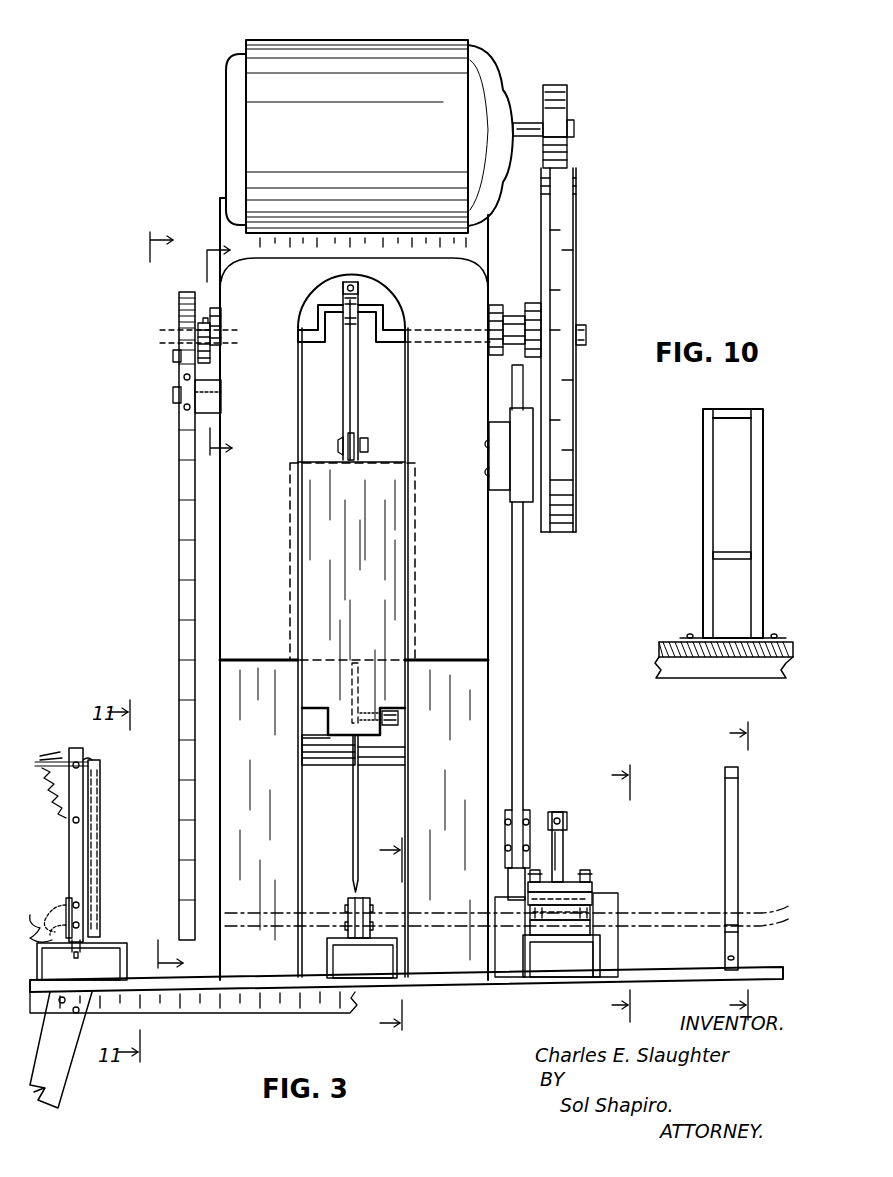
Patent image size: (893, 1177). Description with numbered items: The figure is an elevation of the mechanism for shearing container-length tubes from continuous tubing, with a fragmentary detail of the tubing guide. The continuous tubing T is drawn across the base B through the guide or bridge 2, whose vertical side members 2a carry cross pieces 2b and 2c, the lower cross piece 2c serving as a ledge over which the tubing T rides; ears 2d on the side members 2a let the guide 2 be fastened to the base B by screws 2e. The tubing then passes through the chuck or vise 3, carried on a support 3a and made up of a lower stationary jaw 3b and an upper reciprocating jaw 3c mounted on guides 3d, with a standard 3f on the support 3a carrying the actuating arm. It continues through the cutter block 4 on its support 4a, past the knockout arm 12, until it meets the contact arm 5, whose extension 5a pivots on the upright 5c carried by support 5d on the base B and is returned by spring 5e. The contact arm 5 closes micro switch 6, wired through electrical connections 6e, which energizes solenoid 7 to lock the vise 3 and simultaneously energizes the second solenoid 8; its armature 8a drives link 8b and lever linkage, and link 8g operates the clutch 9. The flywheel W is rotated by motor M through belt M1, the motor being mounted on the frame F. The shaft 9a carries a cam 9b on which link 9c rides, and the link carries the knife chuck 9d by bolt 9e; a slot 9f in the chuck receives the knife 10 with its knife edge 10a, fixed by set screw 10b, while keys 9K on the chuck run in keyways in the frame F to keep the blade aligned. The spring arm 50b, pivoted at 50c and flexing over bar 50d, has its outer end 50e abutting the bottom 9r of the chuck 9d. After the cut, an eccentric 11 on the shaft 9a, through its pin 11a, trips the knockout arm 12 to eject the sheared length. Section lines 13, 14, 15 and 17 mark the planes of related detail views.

In FIG. 3, the motor M is at (438, 40).
In FIG. 3, the belt M1 is at (560, 200).
In FIG. 3, the flywheel W is at (577, 242).
In FIG. 3, the frame F is at (250, 568).
In FIG. 3, the base B is at (668, 968).
In FIG. 10, the base B is at (658, 648).
In FIG. 3, the tubing T is at (678, 900).
In FIG. 3, the guide or bridge 2 is at (738, 838).
In FIG. 10, the guide or bridge 2 is at (765, 505).
In FIG. 10, the vertical side members 2a is at (703, 470).
In FIG. 10, the cross piece 2b is at (740, 402).
In FIG. 10, the cross piece 2c is at (726, 552).
In FIG. 10, the ears 2d is at (685, 638).
In FIG. 10, the screws 2e is at (690, 632).
In FIG. 3, the chuck or vise 3 is at (594, 884).
In FIG. 3, the support 3a is at (523, 965).
In FIG. 3, the lower stationary jaw 3b is at (590, 927).
In FIG. 3, the upper reciprocating jaw 3c is at (594, 897).
In FIG. 3, the guides 3d is at (530, 908).
In FIG. 3, the standard 3f is at (563, 842).
In FIG. 3, the cutter block 4 is at (348, 906).
In FIG. 3, the support 4a is at (327, 952).
In FIG. 3, the contact arm 5 is at (103, 894).
In FIG. 3, the extension 5a is at (50, 758).
In FIG. 3, the upright 5c is at (72, 838).
In FIG. 3, the support 5d is at (125, 952).
In FIG. 3, the spring 5e is at (55, 800).
In FIG. 3, the micro switch 6 is at (66, 892).
In FIG. 3, the electrical connections 6e is at (45, 916).
In FIG. 3, the solenoid 7 is at (626, 900).
In FIG. 3, the second solenoid 8 is at (495, 905).
In FIG. 3, the armature 8a is at (506, 888).
In FIG. 3, the link 8b is at (518, 752).
In FIG. 3, the link 8g is at (520, 592).
In FIG. 3, the clutch 9 is at (525, 356).
In FIG. 3, the shaft 9a is at (400, 345).
In FIG. 3, the cam 9b is at (362, 302).
In FIG. 3, the link 9c is at (345, 372).
In FIG. 3, the knife chuck 9d is at (400, 502).
In FIG. 3, the bolt 9e is at (372, 445).
In FIG. 3, the slot 9f is at (360, 676).
In FIG. 3, the keys 9K is at (290, 510).
In FIG. 3, the bottom of knife chuck 9r is at (390, 742).
In FIG. 3, the knife 10 is at (358, 802).
In FIG. 3, the knife edge 10a is at (352, 888).
In FIG. 3, the set screw 10b is at (398, 716).
In FIG. 3, the eccentric 11 is at (200, 330).
In FIG. 3, the pin 11a is at (173, 357).
In FIG. 3, the knockout arm 12 is at (179, 600).
In FIG. 3, the section line 13 is at (182, 602).
In FIG. 3, the section line 14 is at (233, 351).
In FIG. 3, the section line 15 is at (380, 937).
In FIG. 3, the section line 17 is at (607, 893).
In FIG. 3, the spring arm 50b is at (302, 754).
In FIG. 3, the pivot attachment 50c is at (302, 765).
In FIG. 3, the bar 50d is at (320, 770).
In FIG. 3, the outer end of arm 50e is at (320, 738).